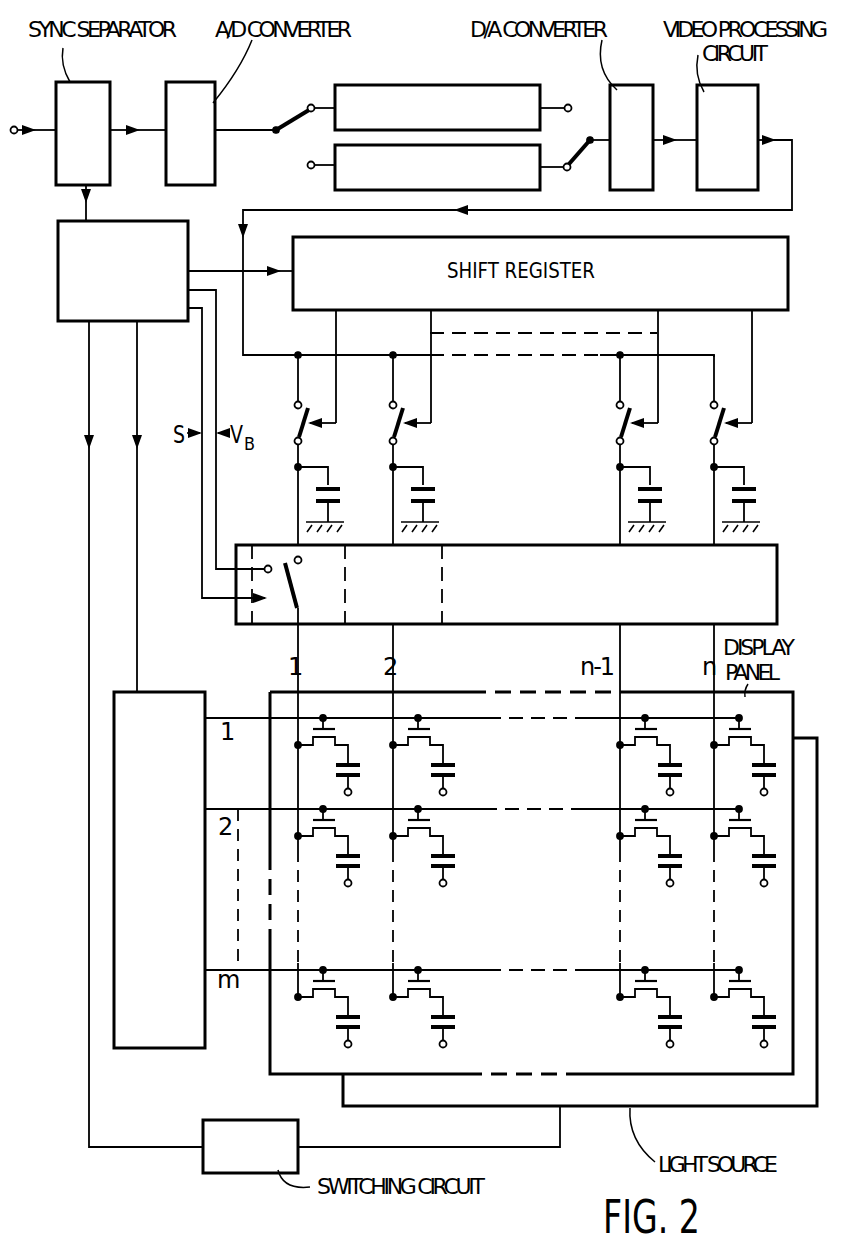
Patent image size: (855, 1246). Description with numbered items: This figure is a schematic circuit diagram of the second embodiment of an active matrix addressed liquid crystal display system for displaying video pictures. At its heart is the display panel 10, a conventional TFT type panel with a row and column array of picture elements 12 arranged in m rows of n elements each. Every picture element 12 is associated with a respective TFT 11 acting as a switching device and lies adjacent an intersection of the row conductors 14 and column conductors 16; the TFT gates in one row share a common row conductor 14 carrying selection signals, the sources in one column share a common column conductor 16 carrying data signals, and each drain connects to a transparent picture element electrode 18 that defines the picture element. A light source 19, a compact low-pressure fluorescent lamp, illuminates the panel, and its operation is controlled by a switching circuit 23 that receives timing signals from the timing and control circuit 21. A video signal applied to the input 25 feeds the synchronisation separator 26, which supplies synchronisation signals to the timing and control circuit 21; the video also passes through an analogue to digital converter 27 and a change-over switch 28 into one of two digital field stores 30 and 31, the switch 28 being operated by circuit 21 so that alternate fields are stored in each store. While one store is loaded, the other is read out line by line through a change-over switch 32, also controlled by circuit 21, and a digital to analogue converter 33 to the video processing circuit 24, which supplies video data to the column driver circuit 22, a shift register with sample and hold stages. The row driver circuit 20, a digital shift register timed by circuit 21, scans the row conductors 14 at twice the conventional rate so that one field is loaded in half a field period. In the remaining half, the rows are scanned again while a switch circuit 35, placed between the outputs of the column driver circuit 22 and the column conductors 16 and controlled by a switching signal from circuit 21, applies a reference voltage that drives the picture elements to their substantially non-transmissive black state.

The active matrix addressed liquid crystal display panel 10 is at (795, 718).
The TFT 11 is at (433, 737).
The picture element 12 is at (457, 760).
The row address conductor 14 is at (472, 718).
The column address conductor 16 is at (300, 963).
The picture element electrode 18 is at (452, 770).
The light source 19 is at (715, 1108).
The row driver circuit 20 is at (190, 707).
The timing and control circuit 21 is at (163, 307).
The column driver circuit 22 is at (556, 412).
The switching circuit 23 is at (237, 1135).
The video processing circuit 24 is at (758, 118).
The input 25 is at (18, 132).
The synchronisation separator 26 is at (92, 97).
The analogue to digital converter 27 is at (203, 92).
The change-over switch 28 is at (293, 106).
The digital field store 30 is at (462, 95).
The digital field store 31 is at (314, 170).
The change-over switch 32 is at (578, 116).
The digital to analogue converter 33 is at (636, 100).
The switch circuit 35 is at (554, 553).